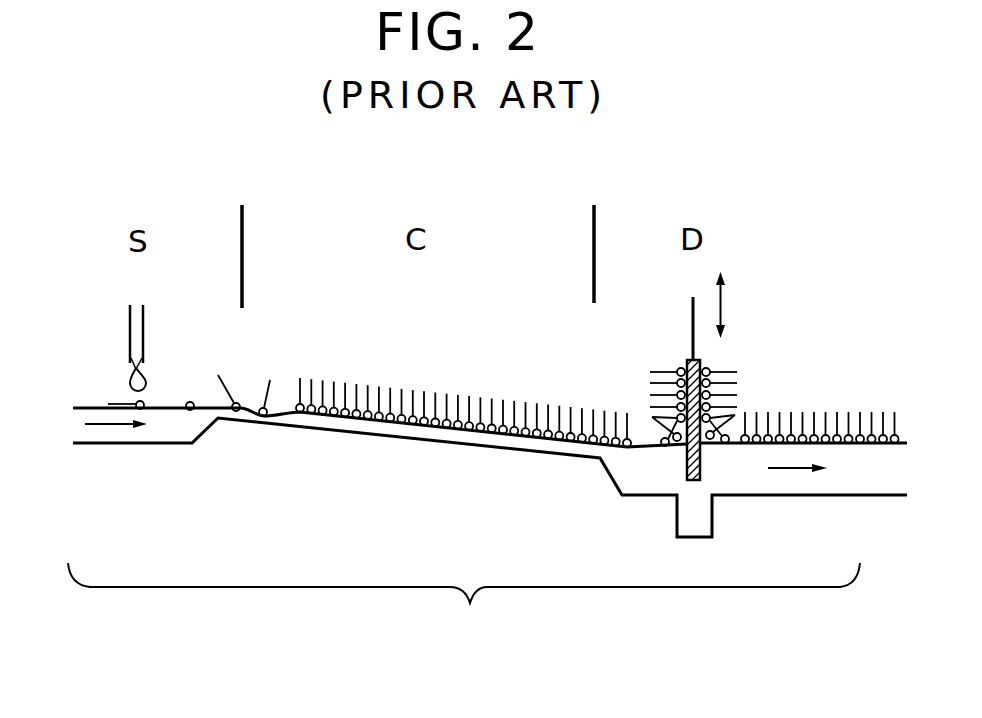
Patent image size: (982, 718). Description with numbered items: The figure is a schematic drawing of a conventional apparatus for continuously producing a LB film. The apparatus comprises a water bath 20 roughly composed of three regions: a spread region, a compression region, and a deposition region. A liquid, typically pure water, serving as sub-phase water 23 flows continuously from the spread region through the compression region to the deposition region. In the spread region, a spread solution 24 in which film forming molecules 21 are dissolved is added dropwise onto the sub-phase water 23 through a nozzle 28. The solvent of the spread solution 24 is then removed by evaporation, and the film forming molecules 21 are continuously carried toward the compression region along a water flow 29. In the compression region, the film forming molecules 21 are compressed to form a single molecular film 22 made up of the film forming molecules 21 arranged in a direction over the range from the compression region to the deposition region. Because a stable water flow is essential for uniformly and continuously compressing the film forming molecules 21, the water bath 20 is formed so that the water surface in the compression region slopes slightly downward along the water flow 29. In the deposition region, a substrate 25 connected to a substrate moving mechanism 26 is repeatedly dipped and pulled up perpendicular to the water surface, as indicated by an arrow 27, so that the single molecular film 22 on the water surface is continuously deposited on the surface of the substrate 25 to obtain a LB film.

The water bath 20 is at (487, 527).
The film forming molecules 21 is at (190, 401).
The single molecular film 22 is at (290, 398).
The sub-phase water 23 is at (165, 432).
The spread solution 24 is at (130, 380).
The substrate 25 is at (687, 360).
The substrate moving mechanism 26 is at (690, 318).
The arrow 27 is at (722, 302).
The nozzle 28 is at (130, 330).
The water flow 29 is at (112, 427).